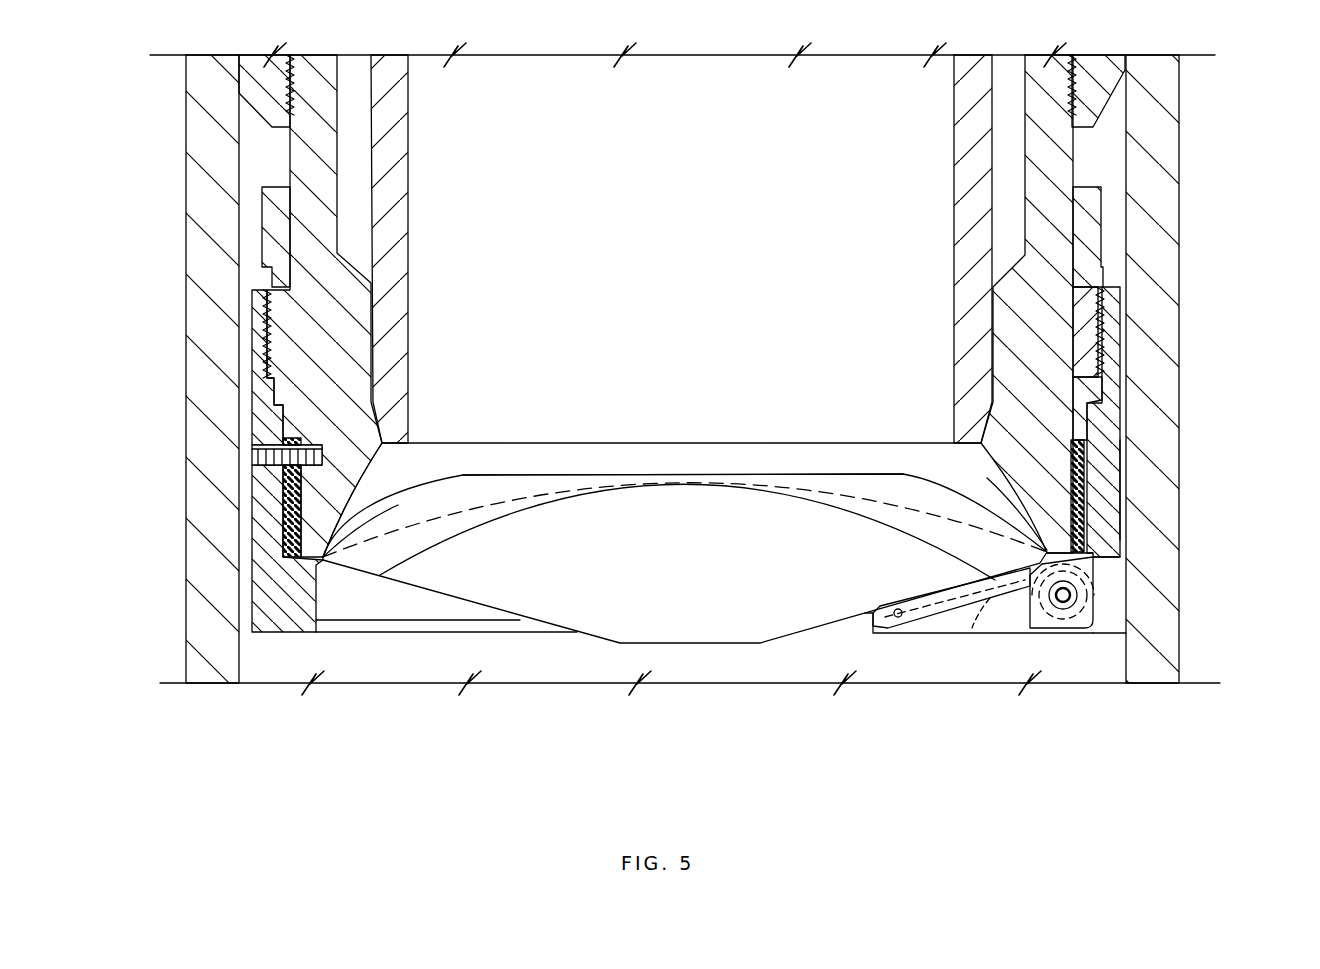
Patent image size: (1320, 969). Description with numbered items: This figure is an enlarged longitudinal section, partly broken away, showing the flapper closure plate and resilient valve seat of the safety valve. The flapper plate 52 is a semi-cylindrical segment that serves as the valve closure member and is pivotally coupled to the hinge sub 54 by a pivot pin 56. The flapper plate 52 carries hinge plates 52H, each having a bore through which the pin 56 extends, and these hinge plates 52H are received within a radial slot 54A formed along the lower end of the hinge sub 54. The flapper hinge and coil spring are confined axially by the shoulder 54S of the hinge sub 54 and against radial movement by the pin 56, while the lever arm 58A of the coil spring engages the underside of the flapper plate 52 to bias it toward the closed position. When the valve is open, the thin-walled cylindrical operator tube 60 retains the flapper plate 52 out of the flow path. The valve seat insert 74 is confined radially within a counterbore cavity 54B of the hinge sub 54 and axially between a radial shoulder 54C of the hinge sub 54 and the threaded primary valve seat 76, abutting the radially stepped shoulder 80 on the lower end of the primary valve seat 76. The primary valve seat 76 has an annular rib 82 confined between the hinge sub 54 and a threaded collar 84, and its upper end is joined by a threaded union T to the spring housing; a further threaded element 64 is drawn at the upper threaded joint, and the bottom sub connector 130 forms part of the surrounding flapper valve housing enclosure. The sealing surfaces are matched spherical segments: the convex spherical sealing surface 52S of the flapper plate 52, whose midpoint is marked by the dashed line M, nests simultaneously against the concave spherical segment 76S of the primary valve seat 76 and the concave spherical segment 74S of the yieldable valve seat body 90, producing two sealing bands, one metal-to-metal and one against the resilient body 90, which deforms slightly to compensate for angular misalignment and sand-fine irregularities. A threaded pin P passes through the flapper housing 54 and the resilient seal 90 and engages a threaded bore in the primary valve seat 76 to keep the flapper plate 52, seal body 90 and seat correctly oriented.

The bottom sub connector 130 is at (1155, 306).
The operator tube 60 is at (408, 143).
The threaded nut 64 is at (1098, 66).
The threaded union T is at (1072, 92).
The threaded collar 84 is at (1092, 212).
The primary valve seat 76 is at (362, 377).
The annular rib 82 is at (1115, 398).
The hinge sub 54 is at (1115, 456).
The counterbore cavity 54B is at (1123, 492).
The threaded pin P is at (262, 447).
The valve seat insert 74 is at (1102, 488).
The concave spherical segment surface 76S is at (358, 488).
The radially stepped shoulder 80 is at (1006, 504).
The flapper plate 52 is at (712, 587).
The convex spherical segment sealing surface 52S is at (560, 473).
The midpoint dashed line M is at (765, 482).
The yieldable valve seat body 90 is at (376, 525).
The concave spherical segment surface 74S is at (1047, 552).
The radial shoulder 54C is at (1092, 557).
The pivot pin 56 is at (1063, 597).
The lever arm 58A is at (987, 597).
The hinge plates 52H is at (978, 625).
The shoulder 54S is at (1123, 590).
The radial slot 54A is at (1128, 607).